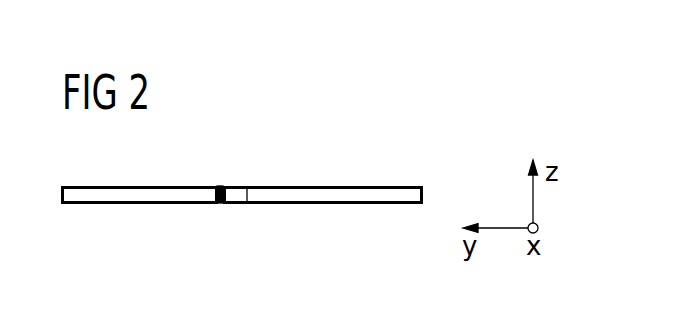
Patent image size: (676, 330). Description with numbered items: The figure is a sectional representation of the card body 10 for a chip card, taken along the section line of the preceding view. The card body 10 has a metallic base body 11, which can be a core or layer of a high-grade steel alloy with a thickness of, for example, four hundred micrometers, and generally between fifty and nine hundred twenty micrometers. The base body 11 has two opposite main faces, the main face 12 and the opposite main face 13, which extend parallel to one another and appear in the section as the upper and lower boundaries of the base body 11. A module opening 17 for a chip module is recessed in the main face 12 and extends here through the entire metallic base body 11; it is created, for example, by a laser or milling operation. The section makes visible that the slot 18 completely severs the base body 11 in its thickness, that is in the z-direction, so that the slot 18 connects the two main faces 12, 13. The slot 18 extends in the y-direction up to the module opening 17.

The card body 10 is at (259, 215).
The metallic base body 11 is at (323, 199).
The main face 12 is at (297, 190).
The main face 13 is at (298, 204).
The module opening 17 is at (196, 192).
The slot 18 is at (220, 204).